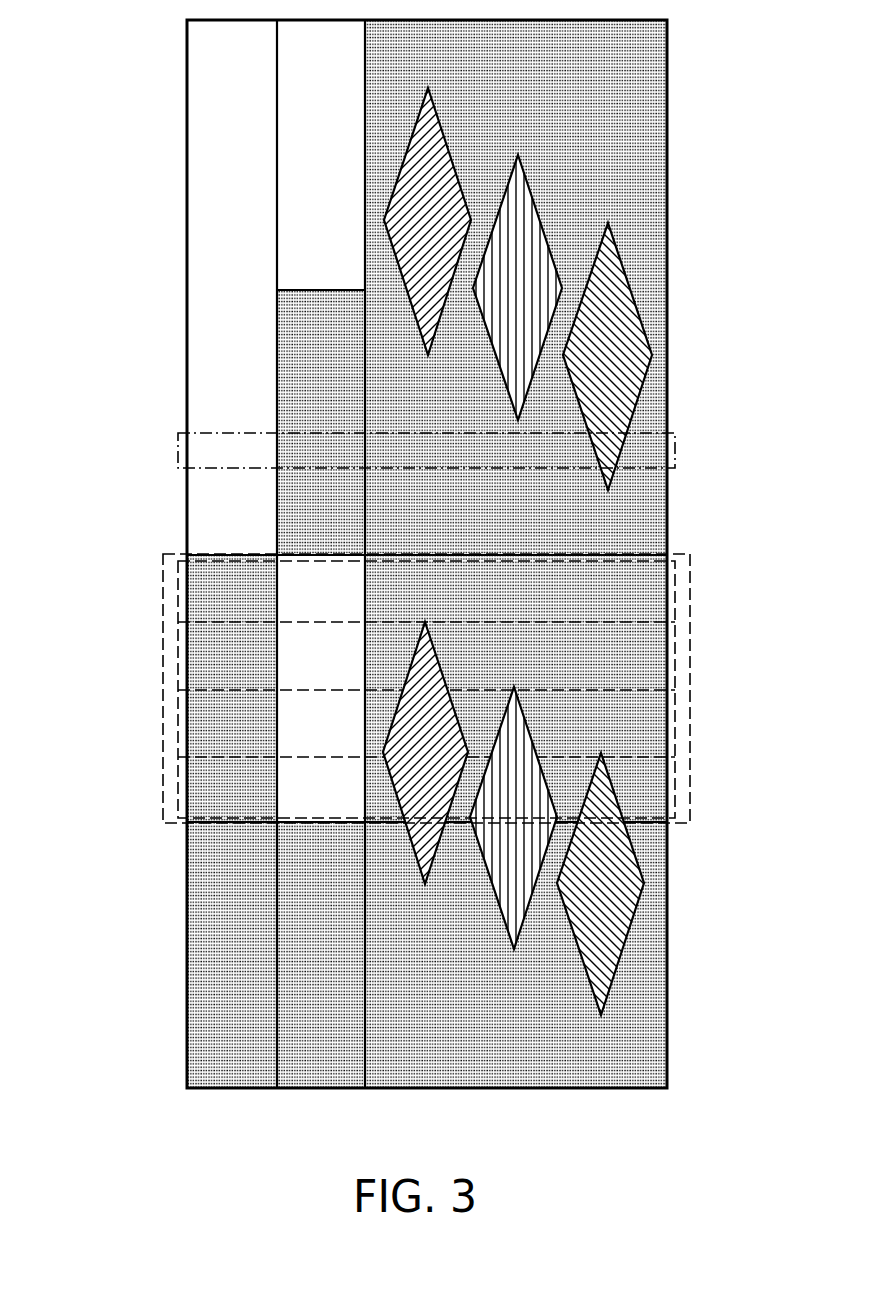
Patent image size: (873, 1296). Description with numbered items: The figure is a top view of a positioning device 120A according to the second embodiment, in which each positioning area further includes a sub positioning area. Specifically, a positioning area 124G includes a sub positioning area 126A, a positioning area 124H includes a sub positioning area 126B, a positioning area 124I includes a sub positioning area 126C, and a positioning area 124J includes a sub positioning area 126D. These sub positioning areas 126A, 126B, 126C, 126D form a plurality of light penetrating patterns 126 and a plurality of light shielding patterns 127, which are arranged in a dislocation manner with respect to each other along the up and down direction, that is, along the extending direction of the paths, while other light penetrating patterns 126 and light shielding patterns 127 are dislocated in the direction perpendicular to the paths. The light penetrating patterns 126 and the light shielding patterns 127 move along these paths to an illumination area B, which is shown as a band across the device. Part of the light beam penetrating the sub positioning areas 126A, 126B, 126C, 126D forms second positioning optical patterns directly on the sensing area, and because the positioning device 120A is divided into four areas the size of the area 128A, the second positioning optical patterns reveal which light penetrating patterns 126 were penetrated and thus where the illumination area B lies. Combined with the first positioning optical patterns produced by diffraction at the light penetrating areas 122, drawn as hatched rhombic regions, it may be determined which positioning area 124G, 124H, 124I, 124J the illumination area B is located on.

The positioning device 120A is at (768, 1149).
The light penetrating areas 122 is at (635, 297).
The positioning area 124G is at (675, 593).
The positioning area 124H is at (675, 658).
The positioning area 124I is at (675, 727).
The positioning area 124J is at (675, 795).
The light penetrating patterns 126 is at (187, 276).
The sub positioning area 126A is at (277, 586).
The sub positioning area 126B is at (277, 653).
The sub positioning area 126C is at (277, 721).
The sub positioning area 126D is at (277, 789).
The light shielding patterns 127 is at (313, 375).
The area 128A is at (152, 562).
The illumination area B is at (678, 456).